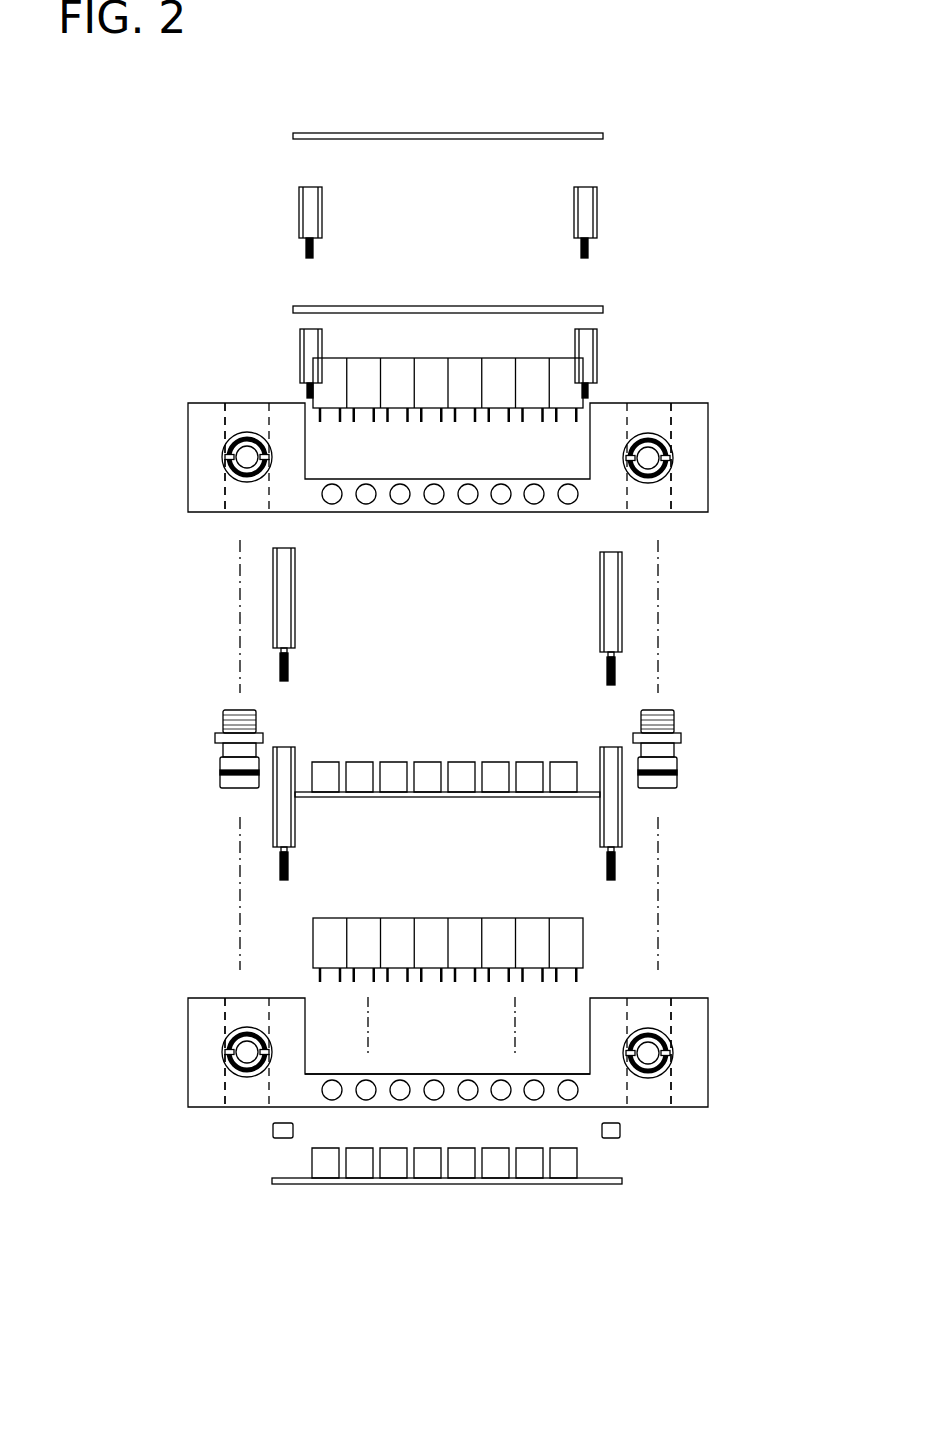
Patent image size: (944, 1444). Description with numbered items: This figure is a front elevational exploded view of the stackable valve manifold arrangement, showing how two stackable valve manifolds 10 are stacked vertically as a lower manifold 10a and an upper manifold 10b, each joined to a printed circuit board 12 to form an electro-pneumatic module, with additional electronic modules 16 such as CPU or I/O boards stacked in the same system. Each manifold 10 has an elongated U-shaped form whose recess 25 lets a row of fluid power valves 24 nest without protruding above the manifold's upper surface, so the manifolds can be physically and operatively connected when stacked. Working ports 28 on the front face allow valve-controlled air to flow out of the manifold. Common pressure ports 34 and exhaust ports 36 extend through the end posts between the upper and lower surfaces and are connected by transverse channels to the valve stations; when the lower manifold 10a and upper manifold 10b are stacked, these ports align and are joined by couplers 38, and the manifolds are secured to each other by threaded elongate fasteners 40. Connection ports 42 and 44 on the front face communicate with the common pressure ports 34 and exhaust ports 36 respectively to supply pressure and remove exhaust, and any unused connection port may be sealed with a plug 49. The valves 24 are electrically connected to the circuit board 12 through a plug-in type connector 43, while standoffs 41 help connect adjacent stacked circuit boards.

The stackable valve manifold 10 is at (443, 768).
The lower manifold 10a is at (200, 1068).
The upper manifold 10b is at (698, 452).
The printed circuit board 12 is at (357, 772).
The electronic module 16 is at (368, 133).
The fluid power valve 24 is at (572, 388).
The recess 25 is at (323, 1015).
The working port 28 is at (503, 497).
The common pressure port 34 is at (236, 408).
The common exhaust port 36 is at (654, 405).
The coupler 38 is at (215, 741).
The threaded elongate fastener 40 is at (612, 610).
The standoff 41 is at (578, 218).
The connection port 42 is at (228, 1045).
The plug-in type connector 43 is at (495, 1165).
The connection port 44 is at (660, 1062).
The plug 49 is at (655, 470).